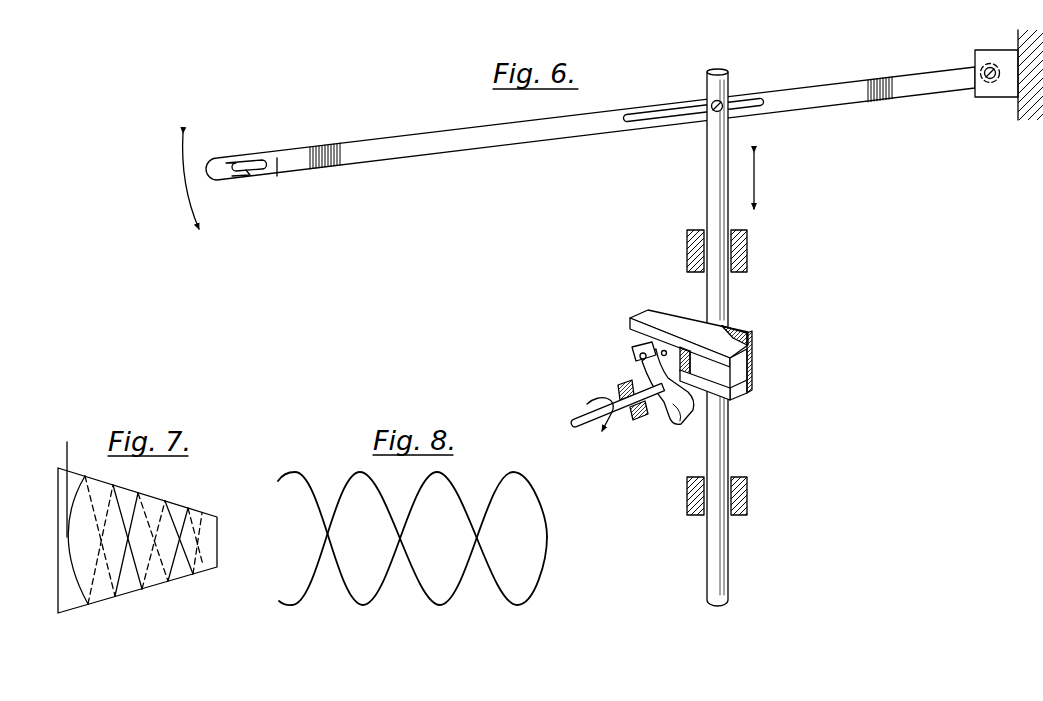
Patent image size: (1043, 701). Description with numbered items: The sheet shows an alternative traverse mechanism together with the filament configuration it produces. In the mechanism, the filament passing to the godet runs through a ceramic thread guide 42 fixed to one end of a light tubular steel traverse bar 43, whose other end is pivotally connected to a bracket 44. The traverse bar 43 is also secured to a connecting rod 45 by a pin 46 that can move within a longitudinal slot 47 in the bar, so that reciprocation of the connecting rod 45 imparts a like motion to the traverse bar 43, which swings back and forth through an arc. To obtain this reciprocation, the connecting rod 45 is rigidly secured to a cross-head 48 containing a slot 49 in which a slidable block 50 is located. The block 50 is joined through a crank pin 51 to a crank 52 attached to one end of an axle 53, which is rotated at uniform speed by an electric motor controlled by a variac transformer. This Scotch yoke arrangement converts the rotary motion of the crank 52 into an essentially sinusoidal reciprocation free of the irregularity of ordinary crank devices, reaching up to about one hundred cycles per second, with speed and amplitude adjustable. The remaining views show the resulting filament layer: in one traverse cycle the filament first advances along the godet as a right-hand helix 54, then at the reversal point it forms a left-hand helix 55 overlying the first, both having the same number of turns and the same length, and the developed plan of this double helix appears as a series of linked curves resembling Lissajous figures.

In FIG. 6, the ceramic thread guide 42 is at (247, 162).
In FIG. 6, the traverse bar 43 is at (418, 134).
In FIG. 6, the bracket 44 is at (979, 61).
In FIG. 6, the connecting rod 45 is at (708, 146).
In FIG. 6, the pin 46 is at (723, 103).
In FIG. 6, the longitudinal slot 47 is at (654, 113).
In FIG. 6, the cross-head 48 is at (712, 347).
In FIG. 6, the slot 49 is at (733, 379).
In FIG. 6, the slidable block 50 is at (652, 338).
In FIG. 6, the crank pin 51 is at (641, 348).
In FIG. 6, the crank 52 is at (642, 371).
In FIG. 6, the axle 53 is at (616, 424).
In FIG. 7, the right-hand helix 54 is at (118, 494).
In FIG. 7, the left-hand helix 55 is at (137, 505).